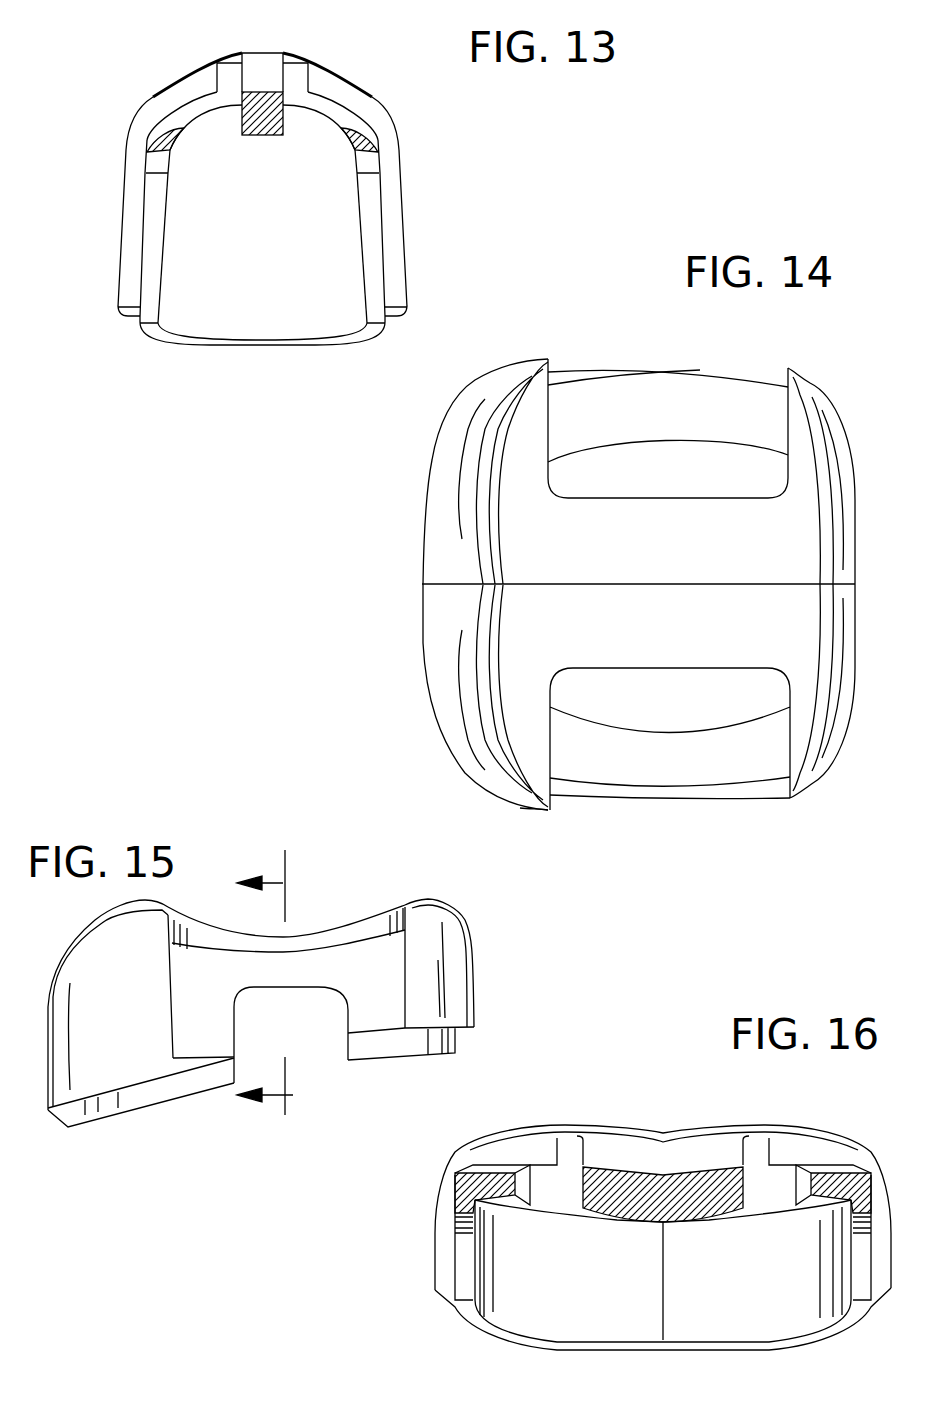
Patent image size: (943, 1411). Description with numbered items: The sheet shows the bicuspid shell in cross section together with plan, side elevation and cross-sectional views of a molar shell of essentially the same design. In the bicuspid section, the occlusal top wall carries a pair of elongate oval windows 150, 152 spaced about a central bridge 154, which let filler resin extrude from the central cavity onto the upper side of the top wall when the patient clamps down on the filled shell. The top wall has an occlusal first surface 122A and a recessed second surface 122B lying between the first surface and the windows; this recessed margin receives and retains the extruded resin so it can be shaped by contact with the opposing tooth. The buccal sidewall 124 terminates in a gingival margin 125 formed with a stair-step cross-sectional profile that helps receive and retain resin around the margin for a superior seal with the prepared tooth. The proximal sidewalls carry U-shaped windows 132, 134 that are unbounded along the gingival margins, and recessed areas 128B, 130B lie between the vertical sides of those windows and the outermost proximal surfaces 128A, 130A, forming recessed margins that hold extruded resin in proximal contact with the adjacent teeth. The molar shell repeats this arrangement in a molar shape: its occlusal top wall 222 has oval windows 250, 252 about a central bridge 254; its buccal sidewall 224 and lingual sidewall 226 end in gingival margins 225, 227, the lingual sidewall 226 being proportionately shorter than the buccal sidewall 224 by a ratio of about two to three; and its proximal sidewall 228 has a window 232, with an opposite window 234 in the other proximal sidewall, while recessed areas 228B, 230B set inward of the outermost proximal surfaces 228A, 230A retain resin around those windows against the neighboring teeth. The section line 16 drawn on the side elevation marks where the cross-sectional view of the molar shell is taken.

In FIG. 13, the occlusal first surface 122A is at (312, 62).
In FIG. 13, the recessed second surface 122B is at (362, 122).
In FIG. 13, the buccal sidewall 124 is at (237, 283).
In FIG. 13, the gingival margin 125 is at (200, 340).
In FIG. 13, the outermost proximal surface 128A is at (122, 198).
In FIG. 13, the recessed area 128B is at (140, 228).
In FIG. 13, the outermost proximal surface 130A is at (407, 214).
In FIG. 13, the recessed area 130B is at (390, 257).
In FIG. 13, the window 132 is at (155, 253).
In FIG. 13, the window 134 is at (378, 275).
In FIG. 13, the window 150 is at (318, 107).
In FIG. 13, the window 152 is at (198, 107).
In FIG. 13, the central bridge 154 is at (257, 88).
In FIG. 14, the occlusal top wall 222 is at (525, 597).
In FIG. 15, the occlusal top wall 222 is at (332, 930).
In FIG. 16, the occlusal top wall 222 is at (713, 1147).
In FIG. 14, the buccal sidewall 224 is at (422, 576).
In FIG. 15, the buccal sidewall 224 is at (48, 1007).
In FIG. 16, the buccal sidewall 224 is at (622, 1297).
In FIG. 15, the gingival margin 225 is at (58, 1115).
In FIG. 14, the lingual sidewall 226 is at (855, 560).
In FIG. 15, the lingual sidewall 226 is at (473, 958).
In FIG. 15, the gingival margin 227 is at (455, 1033).
In FIG. 15, the proximal sidewall 228 is at (130, 1030).
In FIG. 14, the outermost proximal surface 228A is at (535, 813).
In FIG. 14, the recessed area 228B is at (562, 795).
In FIG. 14, the outermost proximal surface 230A is at (540, 357).
In FIG. 14, the recessed area 230B is at (567, 372).
In FIG. 14, the window 232 is at (718, 809).
In FIG. 15, the window 232 is at (335, 993).
In FIG. 16, the window 232 is at (461, 1243).
In FIG. 14, the window 234 is at (719, 371).
In FIG. 16, the window 234 is at (863, 1252).
In FIG. 14, the window 250 is at (617, 437).
In FIG. 16, the window 250 is at (747, 1183).
In FIG. 16, the window 252 is at (577, 1182).
In FIG. 14, the central bridge 254 is at (748, 562).
In FIG. 16, the central bridge 254 is at (627, 1172).
In FIG. 15, the section line 16- 16 is at (281, 991).